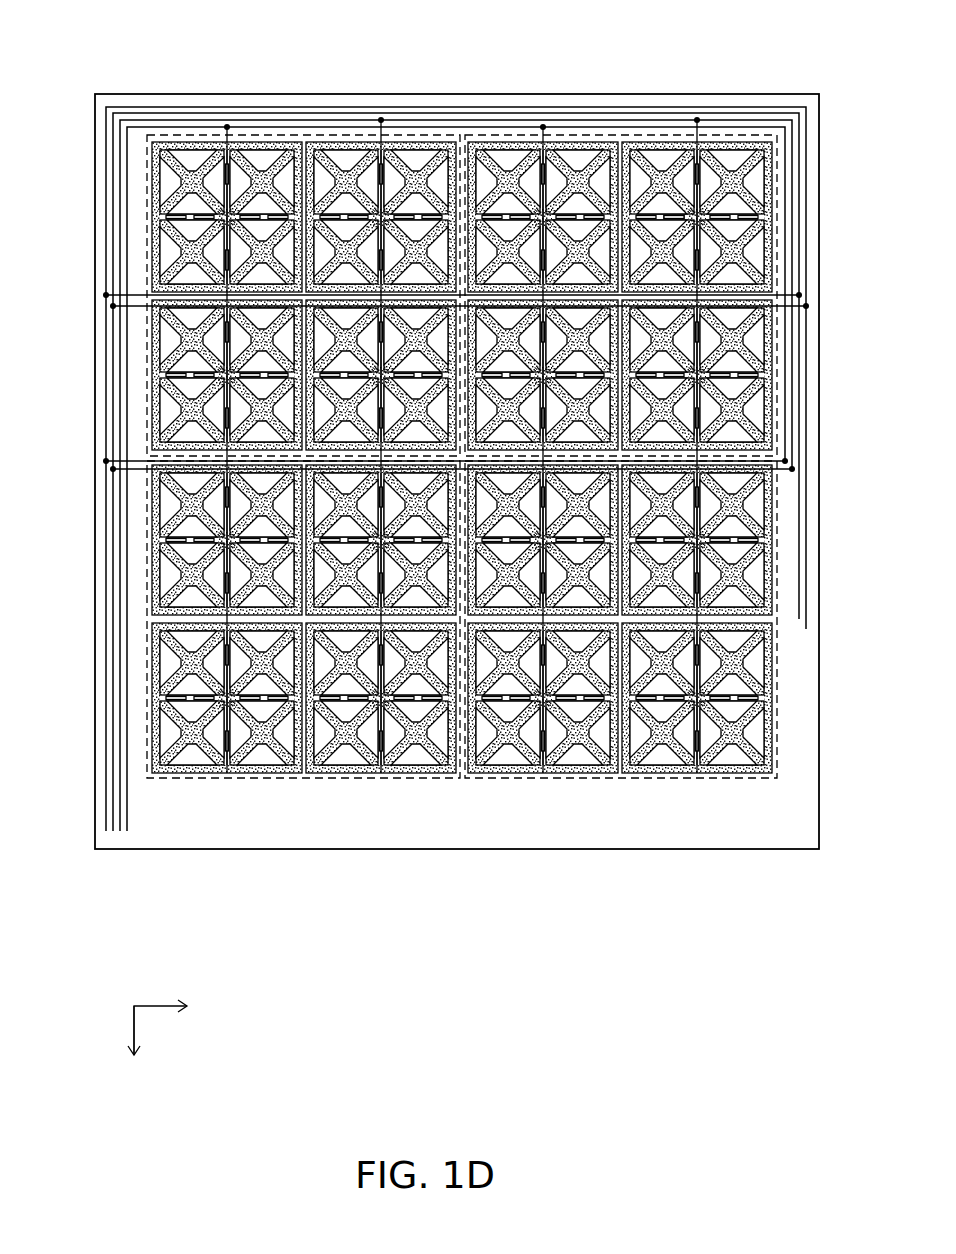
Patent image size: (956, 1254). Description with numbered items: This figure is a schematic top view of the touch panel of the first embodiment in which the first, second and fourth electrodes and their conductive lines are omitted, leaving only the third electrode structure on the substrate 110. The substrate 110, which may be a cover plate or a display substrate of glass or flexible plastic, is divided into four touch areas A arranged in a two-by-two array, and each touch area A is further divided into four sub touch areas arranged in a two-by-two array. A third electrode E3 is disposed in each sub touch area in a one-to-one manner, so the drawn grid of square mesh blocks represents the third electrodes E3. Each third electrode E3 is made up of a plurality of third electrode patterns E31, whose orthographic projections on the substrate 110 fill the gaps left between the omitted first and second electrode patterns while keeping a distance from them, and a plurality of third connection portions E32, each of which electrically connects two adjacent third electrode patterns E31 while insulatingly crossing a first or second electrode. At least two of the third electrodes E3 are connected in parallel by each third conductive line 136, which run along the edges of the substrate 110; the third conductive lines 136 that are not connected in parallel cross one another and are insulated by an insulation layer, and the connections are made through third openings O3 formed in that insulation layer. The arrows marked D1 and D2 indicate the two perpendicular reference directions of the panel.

The substrate 110 is at (124, 100).
The third electrode E3 is at (476, 393).
The third electrode pattern E31 is at (706, 200).
The third connection portion E32 is at (661, 218).
The third opening O3 is at (111, 301).
The touch area A is at (147, 441).
The third conductive line 136 is at (105, 833).
The first direction D1 is at (137, 1048).
The second direction D2 is at (180, 1024).